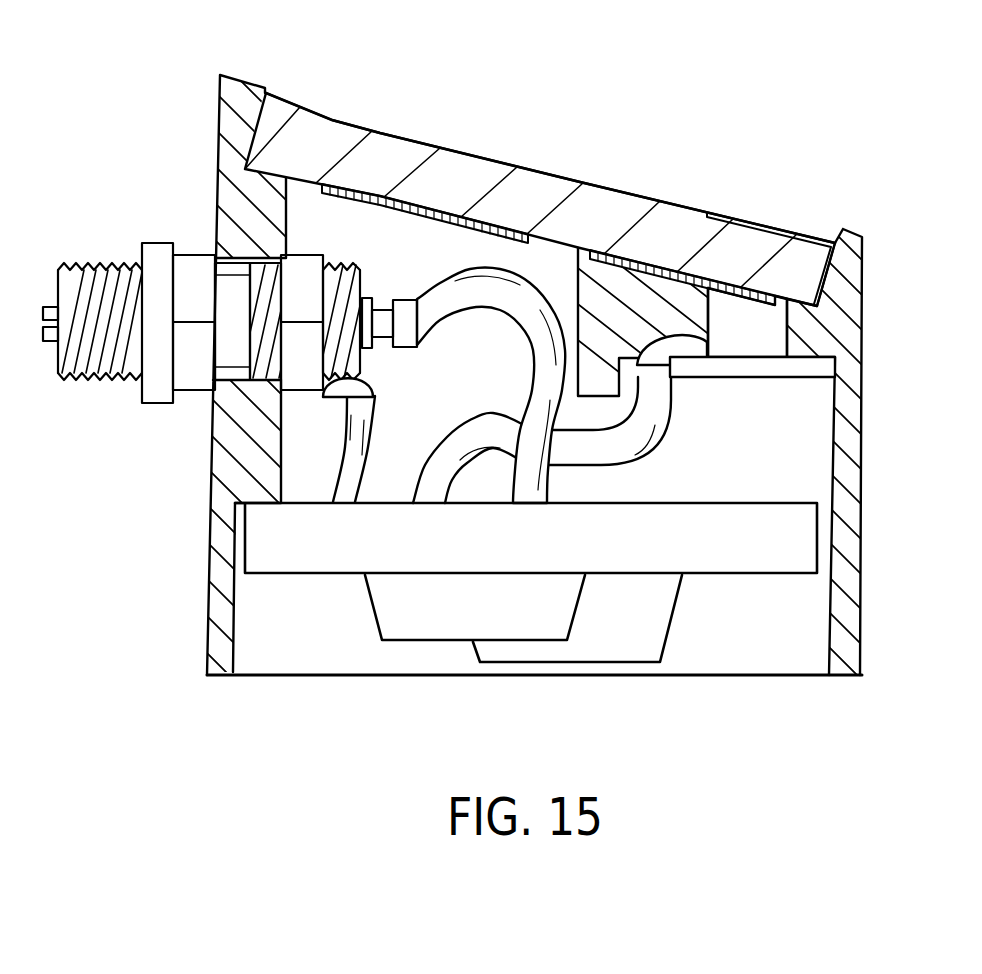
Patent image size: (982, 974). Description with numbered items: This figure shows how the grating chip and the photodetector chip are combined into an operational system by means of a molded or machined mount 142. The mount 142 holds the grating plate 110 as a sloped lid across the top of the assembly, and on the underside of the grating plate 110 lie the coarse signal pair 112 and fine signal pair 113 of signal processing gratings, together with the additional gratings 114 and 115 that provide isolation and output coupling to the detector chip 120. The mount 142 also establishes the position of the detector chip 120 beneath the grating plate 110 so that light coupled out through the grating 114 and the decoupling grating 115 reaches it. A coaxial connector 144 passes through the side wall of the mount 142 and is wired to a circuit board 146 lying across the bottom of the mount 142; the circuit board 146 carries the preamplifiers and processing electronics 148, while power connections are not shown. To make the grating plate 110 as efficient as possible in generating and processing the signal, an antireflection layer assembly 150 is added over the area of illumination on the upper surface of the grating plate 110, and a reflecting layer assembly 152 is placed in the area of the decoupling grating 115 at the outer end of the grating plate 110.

The grating plate 110 is at (572, 180).
The coarse signal pair 112 is at (425, 164).
The fine signal pair 113 is at (390, 184).
The additional grating 114 is at (603, 246).
The decoupling grating 115 is at (757, 284).
The detector chip 120 is at (770, 378).
The mount 142 is at (218, 180).
The coaxial connector 144 is at (142, 248).
The circuit board 146 is at (312, 553).
The preamplifiers and processing electronics 148 is at (423, 628).
The antireflection layer assembly 150 is at (328, 124).
The reflecting layer assembly 152 is at (752, 286).